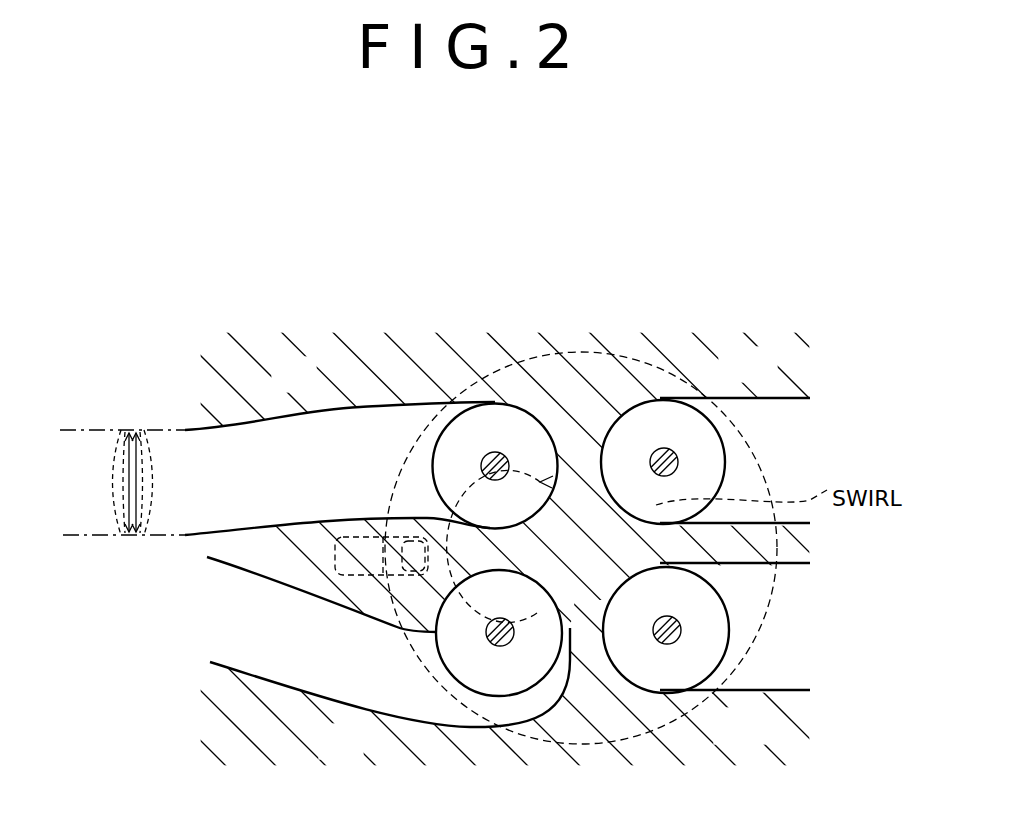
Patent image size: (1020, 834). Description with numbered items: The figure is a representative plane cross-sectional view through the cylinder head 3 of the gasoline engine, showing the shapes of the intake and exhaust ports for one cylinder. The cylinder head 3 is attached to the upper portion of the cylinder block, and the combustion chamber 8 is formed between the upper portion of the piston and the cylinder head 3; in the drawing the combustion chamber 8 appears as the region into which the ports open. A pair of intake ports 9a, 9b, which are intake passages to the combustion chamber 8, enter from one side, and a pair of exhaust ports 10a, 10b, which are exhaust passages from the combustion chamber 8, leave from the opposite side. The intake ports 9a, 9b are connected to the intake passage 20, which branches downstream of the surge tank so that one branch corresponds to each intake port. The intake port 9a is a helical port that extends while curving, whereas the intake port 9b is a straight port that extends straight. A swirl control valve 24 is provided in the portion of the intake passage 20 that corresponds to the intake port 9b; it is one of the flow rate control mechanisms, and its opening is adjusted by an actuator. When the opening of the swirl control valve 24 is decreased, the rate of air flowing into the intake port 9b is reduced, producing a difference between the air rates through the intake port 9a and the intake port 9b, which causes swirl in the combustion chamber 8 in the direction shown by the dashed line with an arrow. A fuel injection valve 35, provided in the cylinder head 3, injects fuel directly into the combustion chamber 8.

The cylinder head 3 is at (715, 332).
The combustion chamber 8 is at (582, 352).
The intake port 9a is at (363, 680).
The intake port 9b is at (337, 425).
The exhaust port 10a is at (753, 663).
The exhaust port 10b is at (765, 418).
The intake passage 20 is at (75, 428).
The swirl control valve 24 is at (150, 475).
The fuel injection valve 35 is at (338, 545).